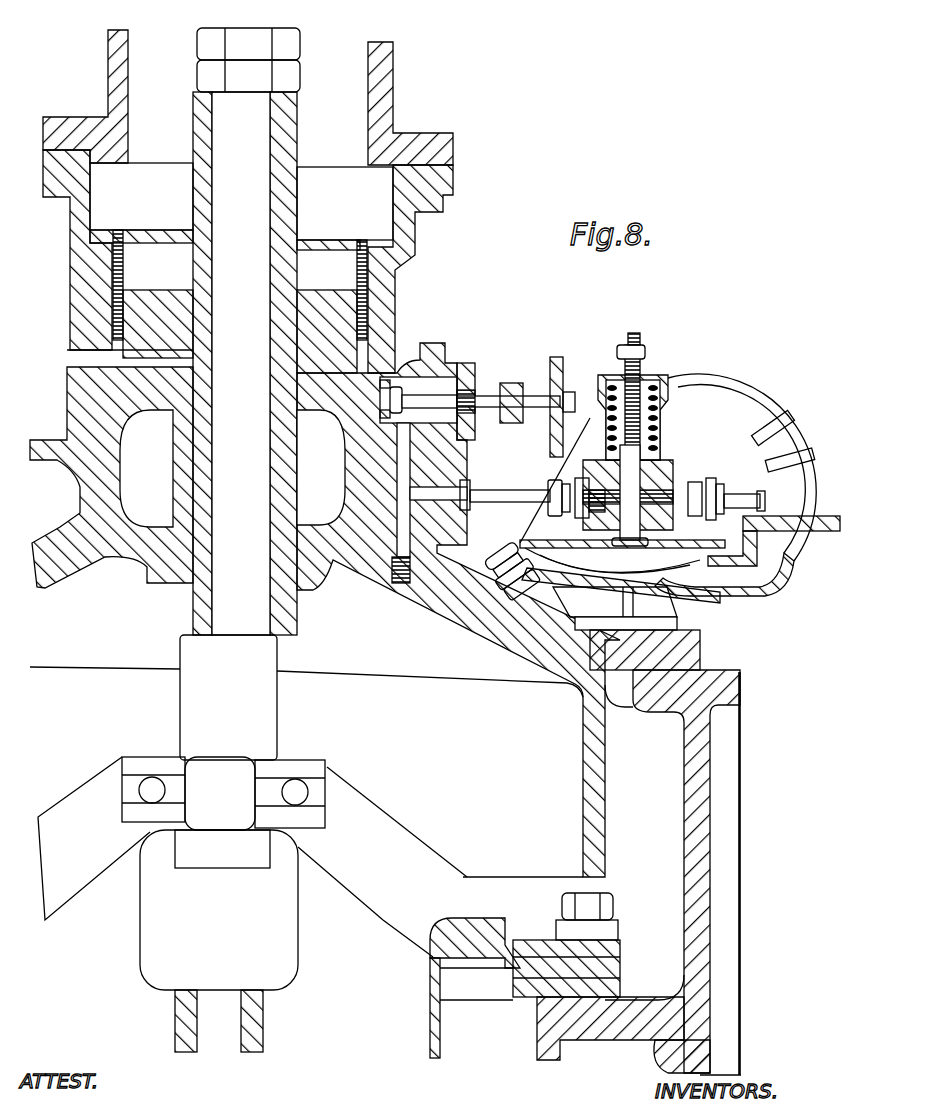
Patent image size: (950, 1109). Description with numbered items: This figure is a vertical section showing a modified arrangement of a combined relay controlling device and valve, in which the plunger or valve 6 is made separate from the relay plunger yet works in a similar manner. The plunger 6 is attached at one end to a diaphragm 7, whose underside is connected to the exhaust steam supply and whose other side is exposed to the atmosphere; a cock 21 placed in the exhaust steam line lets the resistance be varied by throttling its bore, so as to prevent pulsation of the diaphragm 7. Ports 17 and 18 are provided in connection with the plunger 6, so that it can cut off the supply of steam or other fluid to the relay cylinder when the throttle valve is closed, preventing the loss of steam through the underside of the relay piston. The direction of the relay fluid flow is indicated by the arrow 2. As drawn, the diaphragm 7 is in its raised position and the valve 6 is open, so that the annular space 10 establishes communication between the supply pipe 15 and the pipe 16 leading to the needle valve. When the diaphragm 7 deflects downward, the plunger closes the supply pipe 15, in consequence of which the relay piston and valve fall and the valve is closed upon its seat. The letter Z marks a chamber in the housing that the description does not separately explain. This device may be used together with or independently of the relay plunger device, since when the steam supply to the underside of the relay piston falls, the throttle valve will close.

The relay fluid arrow 2 is at (775, 488).
The auxiliary plunger or valve 6 is at (628, 439).
The diaphragm 7 is at (705, 553).
The annular space 10 is at (473, 947).
The supply pipe 15 is at (744, 490).
The pipe leading to the needle valve 16 is at (492, 500).
The port 17 is at (655, 490).
The port 18 is at (596, 466).
The cock 21 is at (786, 425).
The chamber Z is at (303, 317).